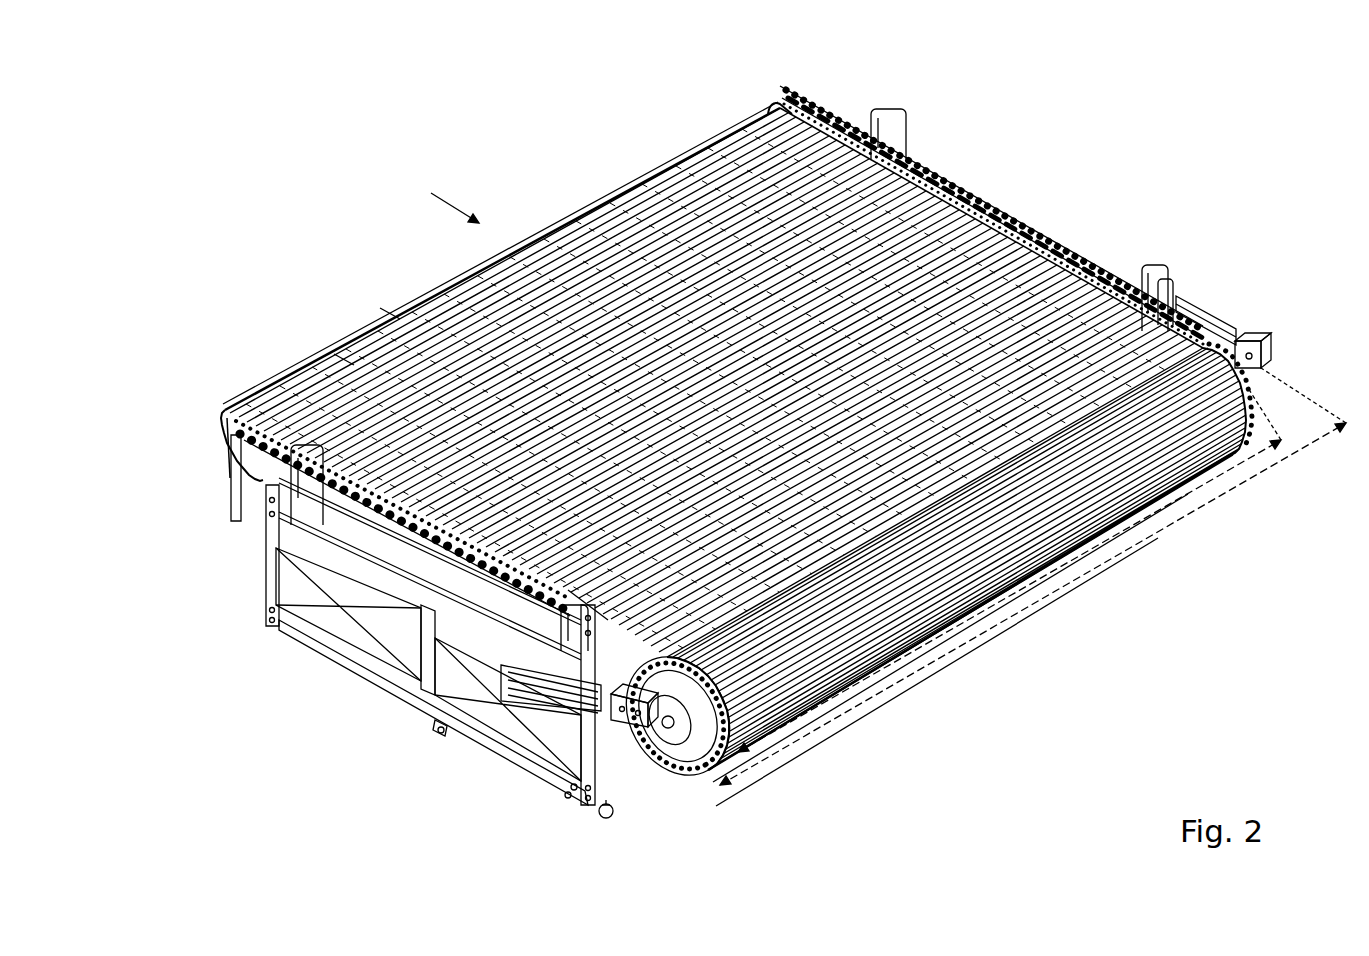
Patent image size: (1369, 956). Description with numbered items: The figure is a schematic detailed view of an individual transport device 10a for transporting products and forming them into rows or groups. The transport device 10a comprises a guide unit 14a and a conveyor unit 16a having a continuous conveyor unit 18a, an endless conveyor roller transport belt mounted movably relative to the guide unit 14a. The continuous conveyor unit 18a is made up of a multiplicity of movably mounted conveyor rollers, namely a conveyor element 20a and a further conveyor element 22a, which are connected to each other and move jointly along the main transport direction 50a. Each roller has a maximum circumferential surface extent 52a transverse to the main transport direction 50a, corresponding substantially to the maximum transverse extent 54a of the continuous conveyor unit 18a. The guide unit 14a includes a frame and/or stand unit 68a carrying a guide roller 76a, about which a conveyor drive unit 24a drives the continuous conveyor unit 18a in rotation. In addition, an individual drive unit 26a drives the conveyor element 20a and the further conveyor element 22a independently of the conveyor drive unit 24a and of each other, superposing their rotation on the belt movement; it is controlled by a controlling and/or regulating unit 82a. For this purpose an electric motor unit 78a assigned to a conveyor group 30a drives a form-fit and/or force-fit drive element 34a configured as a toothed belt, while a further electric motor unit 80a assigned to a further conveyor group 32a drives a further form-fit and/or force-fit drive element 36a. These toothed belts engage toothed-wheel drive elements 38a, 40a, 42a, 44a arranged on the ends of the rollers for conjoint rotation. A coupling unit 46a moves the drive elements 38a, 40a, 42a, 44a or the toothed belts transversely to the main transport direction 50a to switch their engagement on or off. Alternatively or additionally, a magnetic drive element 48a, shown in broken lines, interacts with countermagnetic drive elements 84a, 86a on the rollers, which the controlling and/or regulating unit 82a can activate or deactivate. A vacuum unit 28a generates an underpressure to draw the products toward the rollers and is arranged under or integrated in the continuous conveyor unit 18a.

The transport device 10a is at (1256, 184).
The guide unit 14a is at (249, 600).
The conveyor unit 16a is at (236, 380).
The continuous conveyor unit 18a is at (507, 218).
The conveyor element 20a is at (352, 660).
The further conveyor element 22a is at (1042, 238).
The conveyor drive unit 24a is at (836, 110).
The individual drive unit 26a is at (535, 708).
The vacuum unit 28a is at (381, 302).
The conveyor group 30a is at (325, 600).
The further conveyor group 32a is at (1009, 206).
The form-fit and/or force-fit drive element 34a is at (420, 640).
The further form-fit and/or force-fit drive element 36a is at (1056, 252).
The drive element 38a is at (345, 612).
The drive element 40a is at (293, 630).
The drive element 42a is at (1014, 216).
The drive element 44a is at (997, 204).
The coupling unit 46a is at (232, 488).
The magnetic drive element 48a is at (334, 348).
The main transport direction 50a is at (451, 196).
The maximum circumferential surface extent 52a is at (1004, 591).
The maximum transverse extent 54a is at (960, 637).
The frame and/or stand unit 68a is at (590, 803).
The guide roller 76a is at (672, 762).
The electric motor unit 78a is at (556, 795).
The further electric motor unit 80a is at (1234, 311).
The controlling and/or regulating unit 82a is at (433, 723).
The countermagnetic drive element 84a is at (551, 222).
The countermagnetic drive element 86a is at (594, 190).